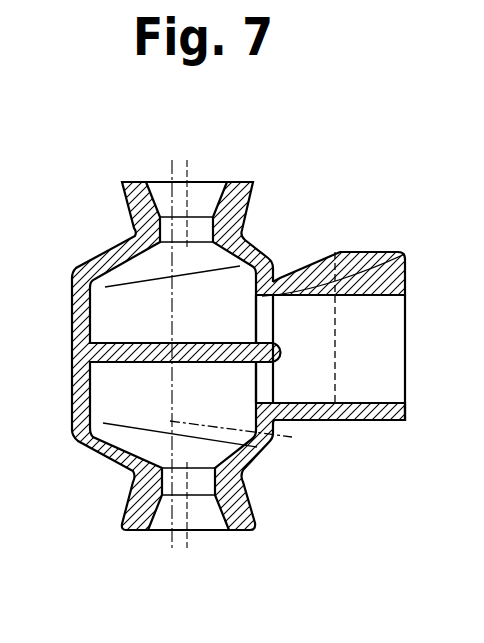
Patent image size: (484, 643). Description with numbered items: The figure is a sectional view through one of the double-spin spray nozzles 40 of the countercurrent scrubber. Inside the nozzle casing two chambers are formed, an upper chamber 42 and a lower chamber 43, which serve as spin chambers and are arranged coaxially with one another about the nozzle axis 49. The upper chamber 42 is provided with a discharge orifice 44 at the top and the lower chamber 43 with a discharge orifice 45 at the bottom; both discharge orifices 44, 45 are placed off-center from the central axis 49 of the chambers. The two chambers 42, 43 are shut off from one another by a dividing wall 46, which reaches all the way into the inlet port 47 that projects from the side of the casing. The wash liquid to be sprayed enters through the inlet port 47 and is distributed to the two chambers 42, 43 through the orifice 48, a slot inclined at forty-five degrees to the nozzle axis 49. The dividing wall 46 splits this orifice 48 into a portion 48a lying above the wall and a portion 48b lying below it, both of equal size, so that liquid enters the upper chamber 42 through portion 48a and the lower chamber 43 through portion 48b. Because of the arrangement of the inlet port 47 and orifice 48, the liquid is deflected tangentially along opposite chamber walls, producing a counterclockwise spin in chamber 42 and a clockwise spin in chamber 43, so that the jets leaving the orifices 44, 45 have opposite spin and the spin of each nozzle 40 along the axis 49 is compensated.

The nozzle 40 is at (102, 475).
The upper chamber 42 is at (118, 303).
The lower chamber 43 is at (118, 385).
The discharge orifice 44 is at (202, 190).
The discharge orifice 45 is at (197, 520).
The dividing wall 46 is at (183, 345).
The inlet port 47 is at (363, 250).
The orifice 48 is at (352, 323).
The upper portion of orifice 48a is at (265, 320).
The lower portion of orifice 48b is at (263, 380).
The nozzle axis 49 is at (211, 443).